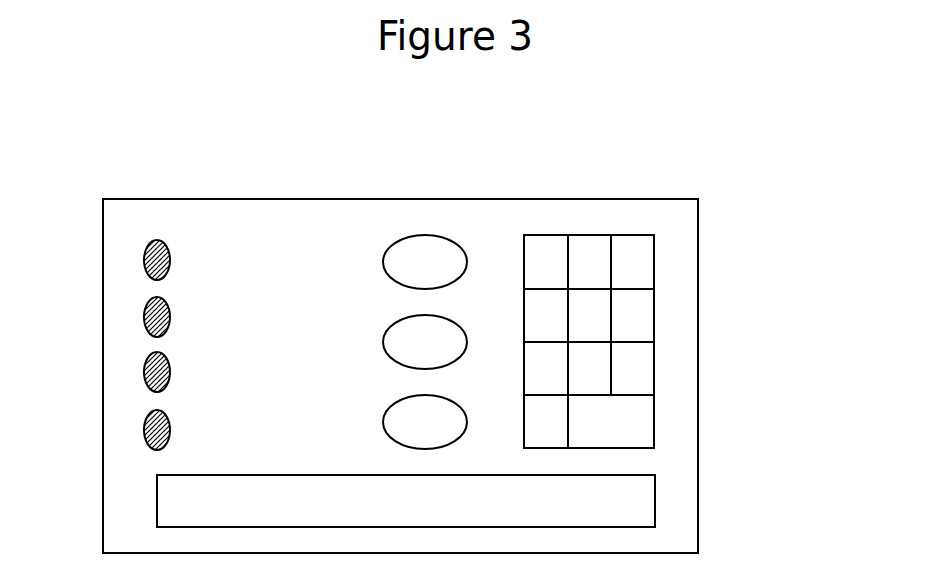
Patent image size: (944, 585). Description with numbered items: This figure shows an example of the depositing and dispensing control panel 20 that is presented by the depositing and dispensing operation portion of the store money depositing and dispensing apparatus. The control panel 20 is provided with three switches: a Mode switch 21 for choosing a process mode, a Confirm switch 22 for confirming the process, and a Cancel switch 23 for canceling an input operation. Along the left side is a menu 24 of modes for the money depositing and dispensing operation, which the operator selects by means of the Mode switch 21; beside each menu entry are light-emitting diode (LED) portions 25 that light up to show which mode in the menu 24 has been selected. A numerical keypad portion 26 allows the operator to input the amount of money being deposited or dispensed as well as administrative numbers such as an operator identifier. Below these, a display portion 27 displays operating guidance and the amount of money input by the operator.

The depositing and dispensing control panel 20 is at (527, 200).
The Mode switch 21 is at (463, 247).
The Confirm switch 22 is at (463, 327).
The Cancel switch 23 is at (463, 407).
The menu 24 is at (280, 248).
The light-emitting diode (LED) portions 25 is at (157, 240).
The numerical keypad portion 26 is at (668, 448).
The display portion 27 is at (656, 500).